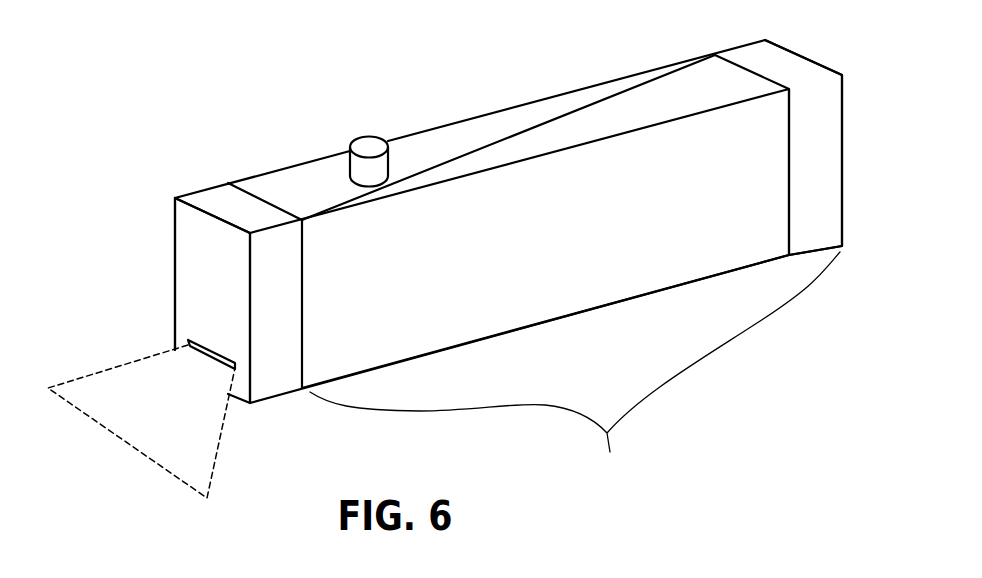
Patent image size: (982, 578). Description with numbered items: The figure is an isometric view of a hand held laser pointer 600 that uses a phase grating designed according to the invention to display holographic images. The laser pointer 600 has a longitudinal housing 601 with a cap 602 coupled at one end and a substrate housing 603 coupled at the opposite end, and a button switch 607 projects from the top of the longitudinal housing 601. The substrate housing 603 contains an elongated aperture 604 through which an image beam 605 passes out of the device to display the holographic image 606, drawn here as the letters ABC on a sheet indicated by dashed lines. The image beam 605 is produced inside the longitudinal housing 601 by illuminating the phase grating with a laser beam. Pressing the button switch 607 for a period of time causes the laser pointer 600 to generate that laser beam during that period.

The hand held laser pointer 600 is at (508, 265).
The longitudinal housing 601 is at (523, 118).
The cap 602 is at (790, 65).
The substrate housing 603 is at (203, 191).
The elongated aperture 604 is at (187, 342).
The image beam 605 is at (108, 370).
The holographic image 606 is at (157, 478).
The button switch 607 is at (360, 143).